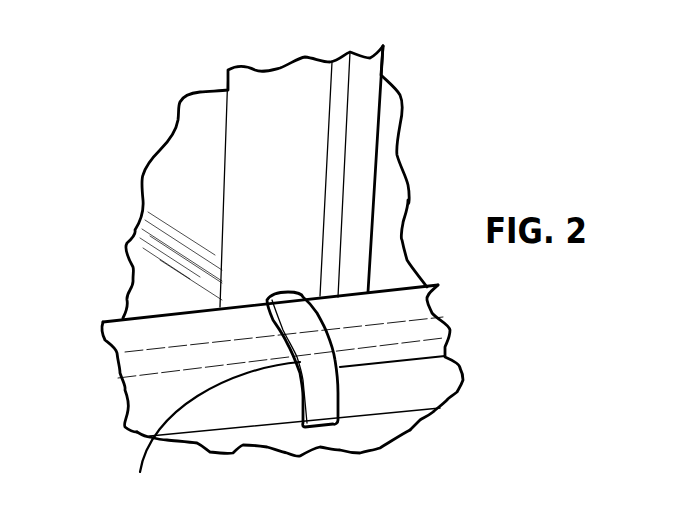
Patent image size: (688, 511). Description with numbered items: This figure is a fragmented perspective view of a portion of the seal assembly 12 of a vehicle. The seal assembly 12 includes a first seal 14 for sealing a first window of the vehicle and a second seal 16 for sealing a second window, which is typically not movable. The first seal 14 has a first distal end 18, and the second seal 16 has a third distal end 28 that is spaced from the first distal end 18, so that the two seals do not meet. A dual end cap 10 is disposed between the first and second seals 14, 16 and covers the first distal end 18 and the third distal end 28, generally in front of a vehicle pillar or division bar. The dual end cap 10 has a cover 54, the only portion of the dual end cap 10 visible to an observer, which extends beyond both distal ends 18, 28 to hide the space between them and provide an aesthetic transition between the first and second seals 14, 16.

The dual end cap 10 is at (325, 428).
The seal assembly 12 is at (290, 465).
The first seal 14 is at (247, 422).
The second seal 16 is at (380, 417).
The first distal end 18 is at (212, 429).
The third distal end 28 is at (447, 357).
The cover 54 is at (287, 297).